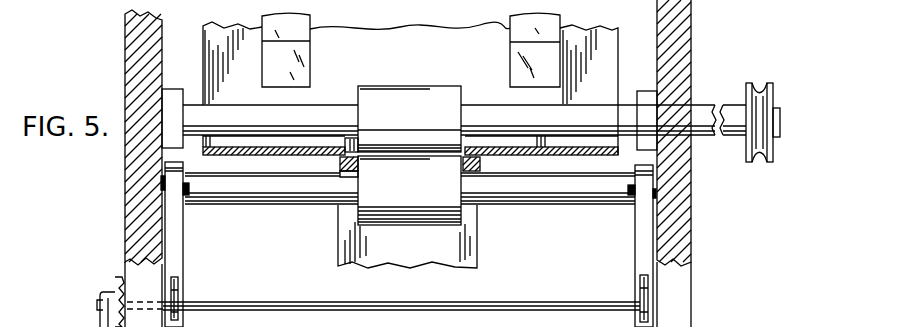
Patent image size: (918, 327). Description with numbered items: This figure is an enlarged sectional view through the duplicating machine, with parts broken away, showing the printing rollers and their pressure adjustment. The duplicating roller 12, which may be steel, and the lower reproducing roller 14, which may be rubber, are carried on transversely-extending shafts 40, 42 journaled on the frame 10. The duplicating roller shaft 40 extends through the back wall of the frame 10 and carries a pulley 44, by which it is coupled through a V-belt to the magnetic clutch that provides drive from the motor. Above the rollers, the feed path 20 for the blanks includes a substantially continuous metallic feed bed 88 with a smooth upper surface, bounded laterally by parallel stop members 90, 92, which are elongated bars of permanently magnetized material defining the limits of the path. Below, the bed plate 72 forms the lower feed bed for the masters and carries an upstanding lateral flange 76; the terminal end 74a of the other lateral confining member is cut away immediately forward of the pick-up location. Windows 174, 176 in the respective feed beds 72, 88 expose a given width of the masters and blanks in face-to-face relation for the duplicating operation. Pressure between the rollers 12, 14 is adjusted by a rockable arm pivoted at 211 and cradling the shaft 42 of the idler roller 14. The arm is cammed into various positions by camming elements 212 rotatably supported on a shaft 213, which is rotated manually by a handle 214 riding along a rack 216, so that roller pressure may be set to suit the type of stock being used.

The frame 10 is at (133, 32).
The feed path 20 is at (422, 38).
The feed bed 88 is at (462, 45).
The stop member 92 is at (304, 28).
The stop member 90 is at (552, 25).
The duplicating roller shaft 40 is at (591, 112).
The pulley 44 is at (772, 84).
The duplicating roller 12 is at (440, 92).
The reproducing roller 14 is at (423, 223).
The window 176 is at (352, 148).
The window 174 is at (357, 168).
The lateral flange 76 is at (485, 163).
The terminal end 74a is at (346, 164).
The shaft 42 is at (597, 200).
The rack 216 is at (180, 249).
The pivot 211 is at (189, 188).
The camming element 212 is at (178, 279).
The shaft 213 is at (305, 303).
The bed plate 72 is at (457, 264).
The handle 214 is at (106, 306).